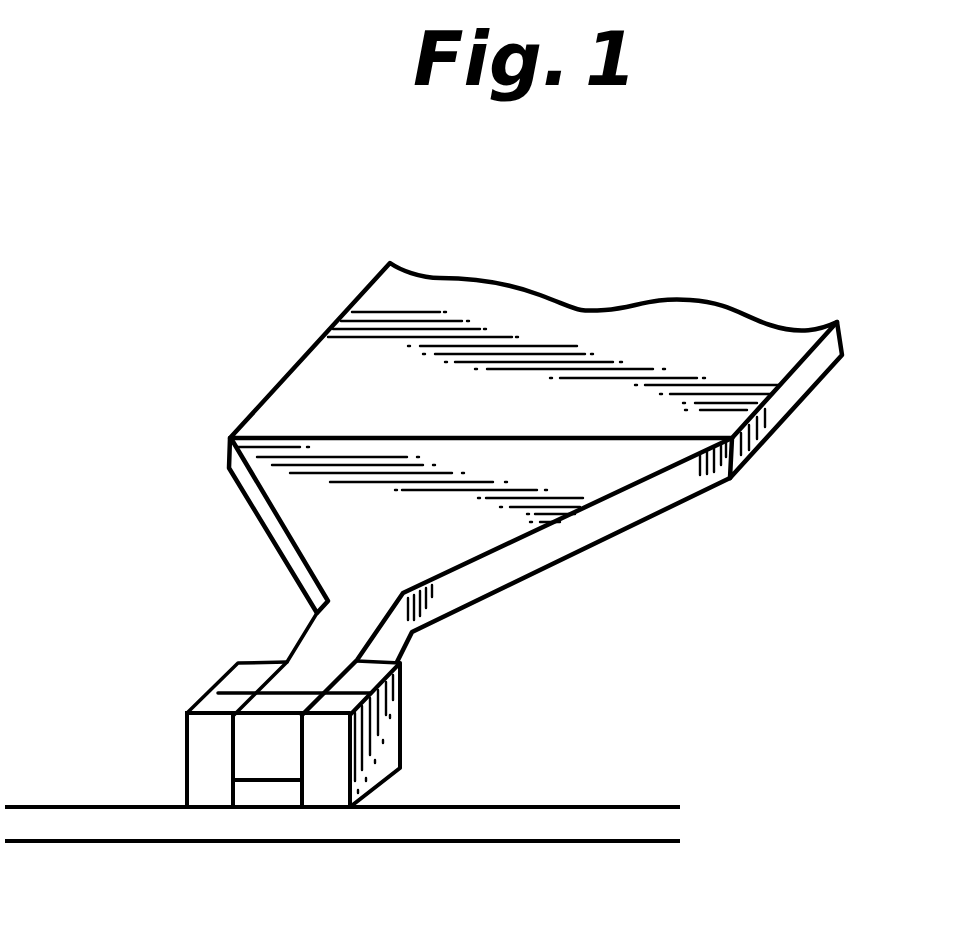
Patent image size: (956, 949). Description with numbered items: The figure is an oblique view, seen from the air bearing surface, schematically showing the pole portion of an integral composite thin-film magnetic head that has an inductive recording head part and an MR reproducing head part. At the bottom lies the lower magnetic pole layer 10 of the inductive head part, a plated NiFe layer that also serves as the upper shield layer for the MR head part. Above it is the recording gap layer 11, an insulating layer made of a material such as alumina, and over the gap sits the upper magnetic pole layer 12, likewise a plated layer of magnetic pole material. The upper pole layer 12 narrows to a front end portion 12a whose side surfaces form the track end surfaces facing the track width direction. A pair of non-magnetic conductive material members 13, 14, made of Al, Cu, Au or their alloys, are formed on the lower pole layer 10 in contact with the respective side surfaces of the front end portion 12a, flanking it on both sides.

The lower magnetic pole layer 10 is at (592, 828).
The recording gap layer 11 is at (267, 790).
The upper magnetic pole layer 12 is at (297, 513).
The front end portion 12a is at (290, 694).
The non-magnetic conductive material member 13 is at (200, 772).
The non-magnetic conductive material member 14 is at (326, 780).